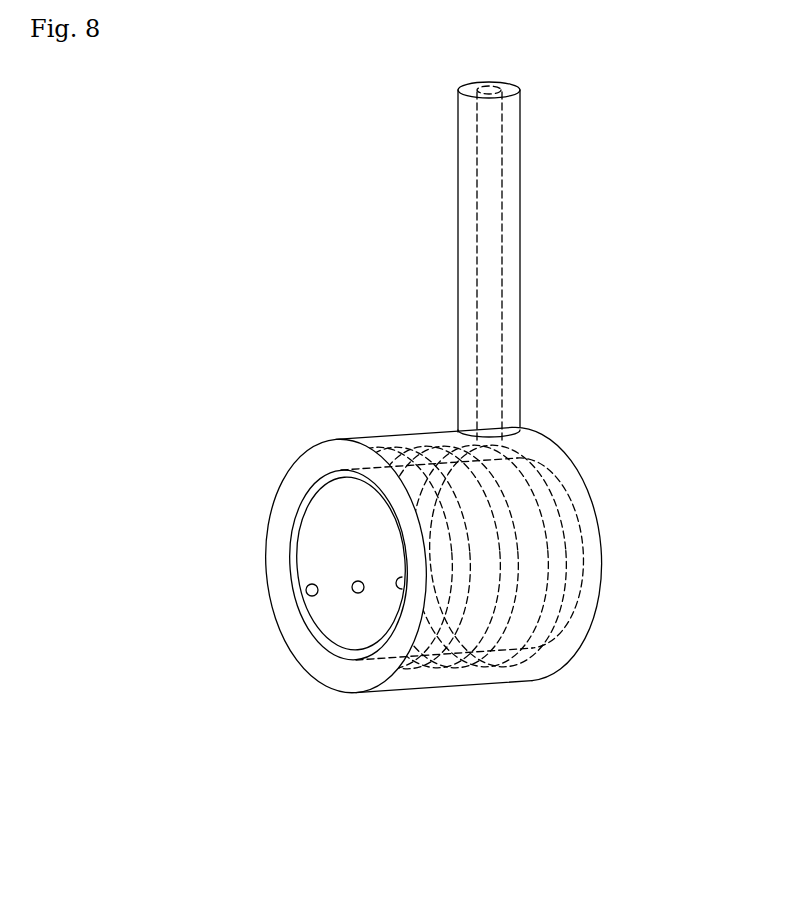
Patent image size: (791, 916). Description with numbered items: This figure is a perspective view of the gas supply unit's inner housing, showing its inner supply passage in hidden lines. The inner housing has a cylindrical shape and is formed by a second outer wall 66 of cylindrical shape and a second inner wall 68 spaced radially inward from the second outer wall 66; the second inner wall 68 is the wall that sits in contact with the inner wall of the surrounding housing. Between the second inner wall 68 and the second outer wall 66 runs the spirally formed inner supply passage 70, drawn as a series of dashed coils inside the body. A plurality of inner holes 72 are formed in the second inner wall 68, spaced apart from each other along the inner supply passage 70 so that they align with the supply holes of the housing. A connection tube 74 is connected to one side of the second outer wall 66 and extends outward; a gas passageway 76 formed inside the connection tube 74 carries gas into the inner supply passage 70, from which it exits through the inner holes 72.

The second outer wall 66 is at (590, 568).
The second inner wall 68 is at (322, 528).
The inner supply passage 70 is at (465, 605).
The inner holes 72 is at (358, 590).
The connection tube 74 is at (520, 258).
The gas passageway 76 is at (491, 205).